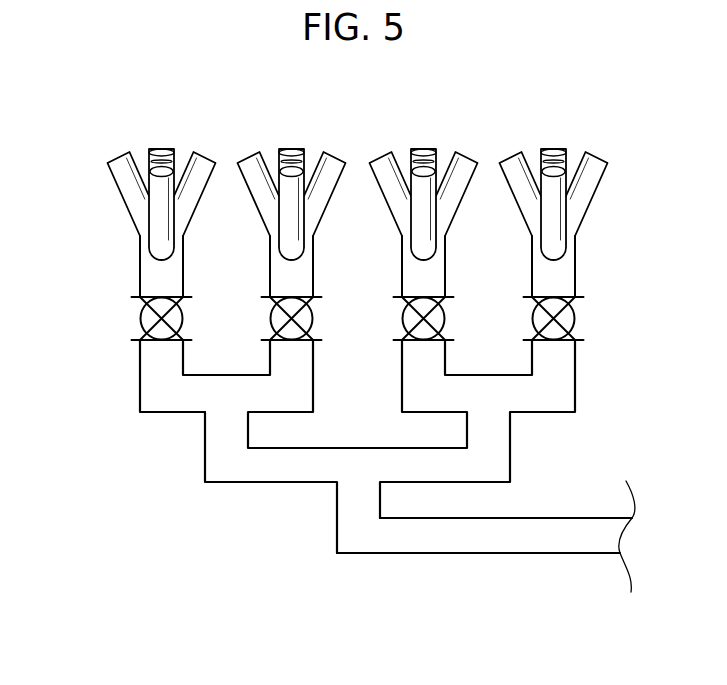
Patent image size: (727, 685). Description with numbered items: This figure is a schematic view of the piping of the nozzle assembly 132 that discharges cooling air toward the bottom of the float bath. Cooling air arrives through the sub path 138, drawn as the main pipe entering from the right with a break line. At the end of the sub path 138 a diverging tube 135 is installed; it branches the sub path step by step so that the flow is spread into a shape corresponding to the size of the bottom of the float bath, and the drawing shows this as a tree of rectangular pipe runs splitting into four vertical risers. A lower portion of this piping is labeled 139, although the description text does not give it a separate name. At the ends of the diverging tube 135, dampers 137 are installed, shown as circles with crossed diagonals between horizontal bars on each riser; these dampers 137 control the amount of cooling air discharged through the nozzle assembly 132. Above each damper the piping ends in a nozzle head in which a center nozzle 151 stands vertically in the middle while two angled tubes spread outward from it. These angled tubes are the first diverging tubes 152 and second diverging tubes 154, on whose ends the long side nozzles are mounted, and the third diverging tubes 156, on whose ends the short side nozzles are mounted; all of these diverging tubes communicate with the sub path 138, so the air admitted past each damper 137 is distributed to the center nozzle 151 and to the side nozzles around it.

The nozzle assembly 132 is at (136, 560).
The diverging tube 135 is at (510, 440).
The damper 137 is at (443, 318).
The sub path 138 is at (547, 547).
The connection pipe 139 is at (337, 507).
The center nozzle 151 is at (153, 148).
The first diverging tube 152 is at (158, 223).
The second diverging tube 154 is at (162, 152).
The third diverging tube 156 is at (120, 155).